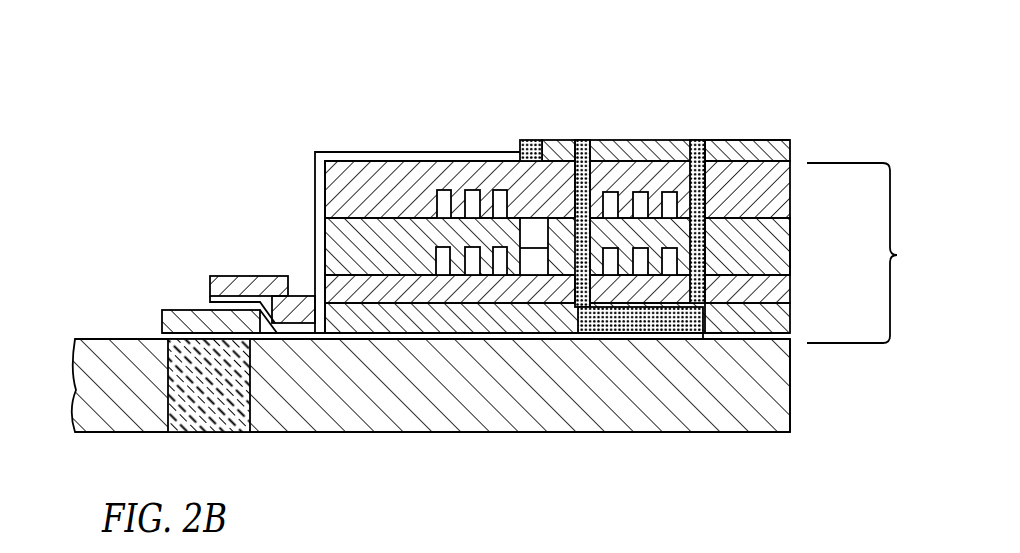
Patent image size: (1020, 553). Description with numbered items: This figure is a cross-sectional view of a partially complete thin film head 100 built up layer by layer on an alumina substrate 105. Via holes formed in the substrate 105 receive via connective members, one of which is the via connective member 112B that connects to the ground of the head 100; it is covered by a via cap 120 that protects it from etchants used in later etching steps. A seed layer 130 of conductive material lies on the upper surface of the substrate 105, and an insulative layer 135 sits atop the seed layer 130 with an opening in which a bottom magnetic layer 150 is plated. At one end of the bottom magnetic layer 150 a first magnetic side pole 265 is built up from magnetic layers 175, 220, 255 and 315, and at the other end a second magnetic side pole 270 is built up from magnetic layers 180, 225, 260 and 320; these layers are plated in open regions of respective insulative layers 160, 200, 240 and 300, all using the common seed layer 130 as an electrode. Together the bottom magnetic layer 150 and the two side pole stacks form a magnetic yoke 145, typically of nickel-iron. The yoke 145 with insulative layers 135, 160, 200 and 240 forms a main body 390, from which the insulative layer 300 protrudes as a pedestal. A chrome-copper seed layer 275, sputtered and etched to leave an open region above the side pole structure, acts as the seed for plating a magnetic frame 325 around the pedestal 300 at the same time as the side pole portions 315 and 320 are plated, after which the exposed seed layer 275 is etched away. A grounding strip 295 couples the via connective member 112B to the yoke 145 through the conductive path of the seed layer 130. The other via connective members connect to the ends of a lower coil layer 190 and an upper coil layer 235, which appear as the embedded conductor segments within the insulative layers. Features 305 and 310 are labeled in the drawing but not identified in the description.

The thin film head 100 is at (763, 530).
The alumina substrate 105 is at (97, 347).
The via connective member 112B is at (250, 412).
The via cap 120 is at (175, 312).
The seed layer 130 is at (790, 350).
The insulative layer 135 is at (790, 322).
The magnetic yoke 145 is at (790, 236).
The bottom magnetic layer 150 is at (638, 327).
The insulative layer 160 is at (790, 290).
The magnetic layer 175 is at (582, 320).
The magnetic layer 180 is at (708, 338).
The lower coil layer 190 is at (437, 258).
The insulative layer 200 is at (790, 258).
The magnetic layer 220 is at (578, 277).
The magnetic layer 225 is at (705, 277).
The upper coil layer 235 is at (440, 197).
The insulative layer 240 is at (790, 192).
The magnetic layer 255 is at (575, 190).
The magnetic layer 260 is at (747, 140).
The first magnetic side pole 265 is at (575, 158).
The second magnetic side pole 270 is at (720, 140).
The chrome-copper seed layer 275 is at (408, 153).
The grounding strip 295 is at (265, 273).
The insulative pedestal 300 is at (787, 140).
The first via 305 is at (582, 140).
The second via 310 is at (697, 140).
The magnetic side pole portion 315 is at (590, 140).
The magnetic side pole portion 320 is at (705, 140).
The magnetic frame 325 is at (527, 140).
The main body 390 is at (874, 253).